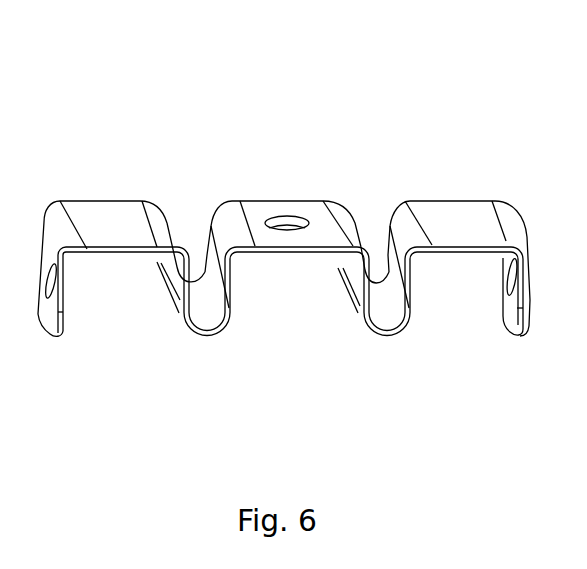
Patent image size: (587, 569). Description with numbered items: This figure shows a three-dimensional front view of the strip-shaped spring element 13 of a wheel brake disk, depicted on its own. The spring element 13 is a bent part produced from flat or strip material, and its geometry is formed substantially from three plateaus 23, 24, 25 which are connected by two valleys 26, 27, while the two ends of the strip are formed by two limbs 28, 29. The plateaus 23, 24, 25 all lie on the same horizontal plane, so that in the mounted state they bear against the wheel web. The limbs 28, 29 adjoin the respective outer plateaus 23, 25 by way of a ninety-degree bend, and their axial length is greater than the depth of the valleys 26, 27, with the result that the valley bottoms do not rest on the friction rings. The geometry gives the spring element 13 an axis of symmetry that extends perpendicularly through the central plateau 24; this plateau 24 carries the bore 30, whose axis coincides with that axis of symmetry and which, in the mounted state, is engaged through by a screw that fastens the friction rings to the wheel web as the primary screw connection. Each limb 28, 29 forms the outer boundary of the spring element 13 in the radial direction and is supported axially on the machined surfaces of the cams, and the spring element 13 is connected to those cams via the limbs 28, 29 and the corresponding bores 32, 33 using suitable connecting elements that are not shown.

The spring element 13 is at (493, 175).
The plateau 23 is at (107, 223).
The plateau 24 is at (252, 210).
The plateau 25 is at (443, 210).
The valley 26 is at (197, 315).
The valley 27 is at (378, 313).
The limb 28 is at (63, 295).
The limb 29 is at (529, 300).
The bore 30 is at (286, 218).
The bore 32 is at (44, 312).
The bore 33 is at (503, 302).